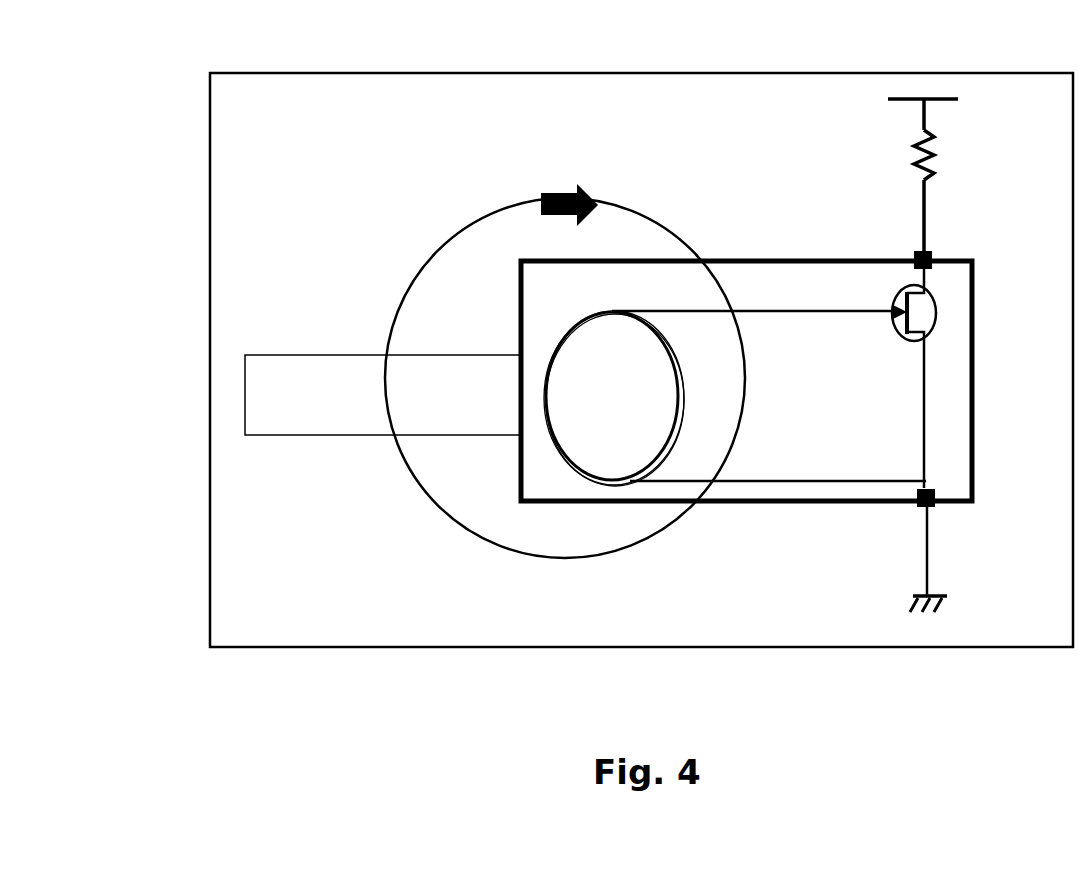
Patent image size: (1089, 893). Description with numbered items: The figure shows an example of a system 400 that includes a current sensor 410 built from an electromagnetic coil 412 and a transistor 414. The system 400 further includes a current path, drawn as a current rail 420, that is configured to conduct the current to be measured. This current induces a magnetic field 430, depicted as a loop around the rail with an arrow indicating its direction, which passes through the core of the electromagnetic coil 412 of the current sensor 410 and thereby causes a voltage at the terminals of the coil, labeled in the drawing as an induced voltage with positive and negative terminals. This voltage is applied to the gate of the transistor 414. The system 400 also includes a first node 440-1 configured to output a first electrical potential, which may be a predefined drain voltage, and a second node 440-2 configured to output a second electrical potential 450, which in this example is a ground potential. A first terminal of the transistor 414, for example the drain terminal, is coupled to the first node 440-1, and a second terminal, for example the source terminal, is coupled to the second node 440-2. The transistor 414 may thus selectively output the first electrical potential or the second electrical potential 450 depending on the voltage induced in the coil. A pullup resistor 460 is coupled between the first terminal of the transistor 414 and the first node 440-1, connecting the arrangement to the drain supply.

The system 400 is at (150, 100).
The current sensor 410 is at (842, 259).
The electromagnetic coil 412 is at (608, 484).
The transistor 414 is at (925, 334).
The current path (current rail) 420 is at (335, 354).
The magnetic field 430 is at (426, 262).
The first node 440-1 is at (925, 243).
The second node 440-2 is at (927, 525).
The second electrical potential 450 is at (915, 598).
The pullup resistor 460 is at (910, 146).